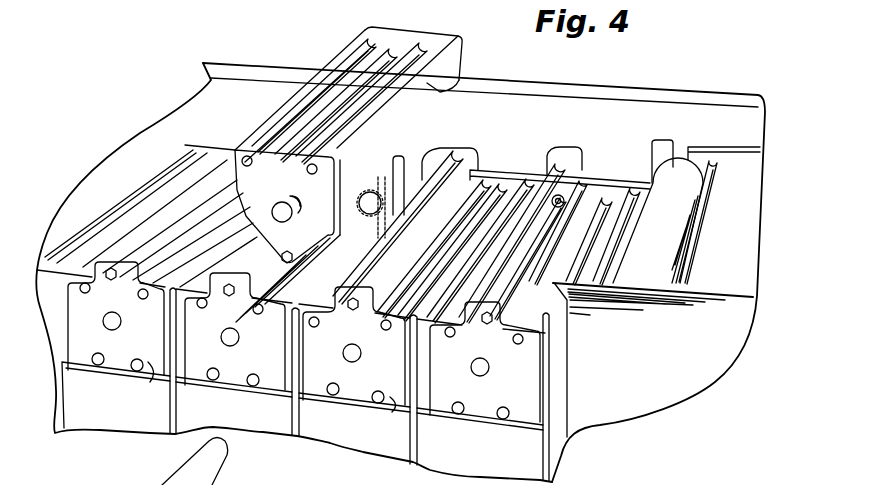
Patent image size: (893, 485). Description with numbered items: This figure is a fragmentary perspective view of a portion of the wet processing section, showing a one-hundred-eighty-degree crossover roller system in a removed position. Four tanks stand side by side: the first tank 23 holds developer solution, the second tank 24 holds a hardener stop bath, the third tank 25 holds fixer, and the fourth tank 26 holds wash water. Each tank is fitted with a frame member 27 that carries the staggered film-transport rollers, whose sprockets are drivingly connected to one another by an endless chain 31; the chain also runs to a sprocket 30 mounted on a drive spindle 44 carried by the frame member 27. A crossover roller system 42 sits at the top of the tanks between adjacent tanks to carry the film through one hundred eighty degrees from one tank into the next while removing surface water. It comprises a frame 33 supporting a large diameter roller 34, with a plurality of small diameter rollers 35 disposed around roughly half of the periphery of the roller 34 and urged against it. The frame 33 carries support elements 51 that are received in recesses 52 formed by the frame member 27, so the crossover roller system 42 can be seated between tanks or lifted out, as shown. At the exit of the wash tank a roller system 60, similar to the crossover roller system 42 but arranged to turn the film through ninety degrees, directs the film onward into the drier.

The first tank 23 is at (116, 370).
The second tank 24 is at (233, 383).
The third tank 25 is at (343, 400).
The fourth tank 26 is at (476, 420).
The frame member 27 is at (197, 365).
The sprocket 30 is at (387, 190).
The endless chain 31 is at (395, 185).
The frame 33 is at (278, 194).
The large diameter roller 34 is at (346, 176).
The small diameter rollers 35 is at (427, 82).
The crossover roller system 42 is at (380, 62).
The drive spindle 44 is at (485, 166).
The support elements 51 is at (247, 157).
The recesses 52 is at (312, 322).
The roller system 60 is at (607, 200).